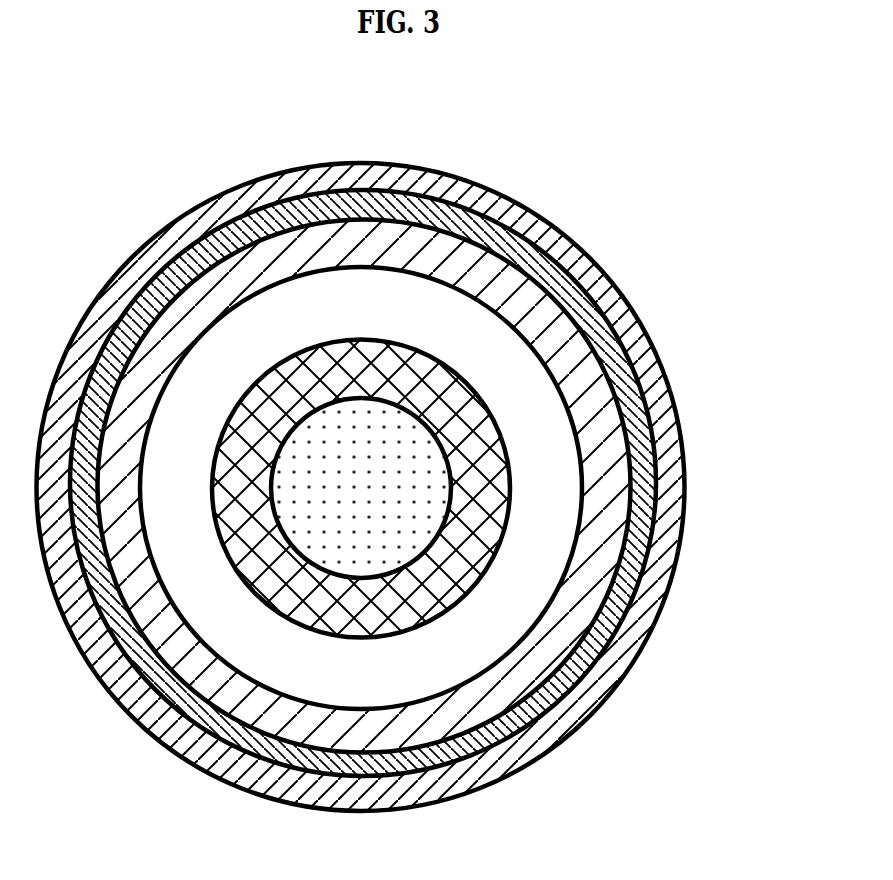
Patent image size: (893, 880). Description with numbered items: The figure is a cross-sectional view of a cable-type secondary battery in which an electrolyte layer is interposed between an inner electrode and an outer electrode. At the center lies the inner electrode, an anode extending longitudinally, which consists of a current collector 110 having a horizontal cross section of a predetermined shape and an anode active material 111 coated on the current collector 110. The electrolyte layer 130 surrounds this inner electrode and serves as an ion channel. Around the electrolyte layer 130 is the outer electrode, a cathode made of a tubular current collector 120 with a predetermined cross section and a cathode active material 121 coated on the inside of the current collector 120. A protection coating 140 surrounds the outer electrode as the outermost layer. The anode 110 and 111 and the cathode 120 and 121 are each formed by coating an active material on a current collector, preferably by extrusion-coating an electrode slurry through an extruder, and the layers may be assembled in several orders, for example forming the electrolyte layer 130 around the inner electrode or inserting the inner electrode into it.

The current collector 110 is at (350, 433).
The anode active material 111 is at (380, 373).
The electrolyte layer 130 is at (547, 400).
The cathode active material 121 is at (602, 415).
The tubular current collector 120 is at (648, 480).
The protection coating 140 is at (662, 532).